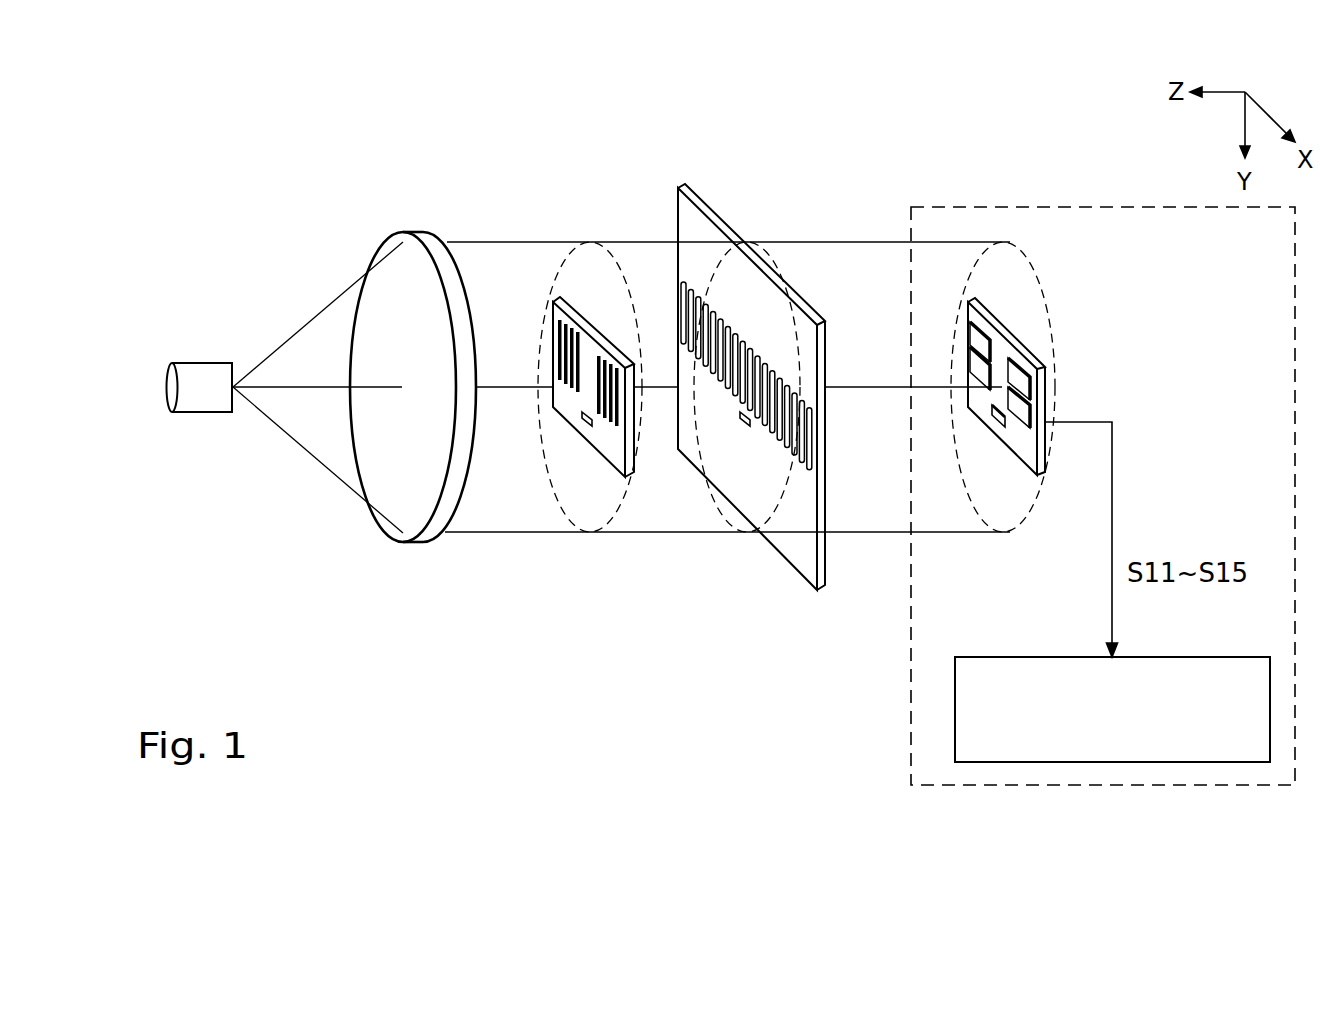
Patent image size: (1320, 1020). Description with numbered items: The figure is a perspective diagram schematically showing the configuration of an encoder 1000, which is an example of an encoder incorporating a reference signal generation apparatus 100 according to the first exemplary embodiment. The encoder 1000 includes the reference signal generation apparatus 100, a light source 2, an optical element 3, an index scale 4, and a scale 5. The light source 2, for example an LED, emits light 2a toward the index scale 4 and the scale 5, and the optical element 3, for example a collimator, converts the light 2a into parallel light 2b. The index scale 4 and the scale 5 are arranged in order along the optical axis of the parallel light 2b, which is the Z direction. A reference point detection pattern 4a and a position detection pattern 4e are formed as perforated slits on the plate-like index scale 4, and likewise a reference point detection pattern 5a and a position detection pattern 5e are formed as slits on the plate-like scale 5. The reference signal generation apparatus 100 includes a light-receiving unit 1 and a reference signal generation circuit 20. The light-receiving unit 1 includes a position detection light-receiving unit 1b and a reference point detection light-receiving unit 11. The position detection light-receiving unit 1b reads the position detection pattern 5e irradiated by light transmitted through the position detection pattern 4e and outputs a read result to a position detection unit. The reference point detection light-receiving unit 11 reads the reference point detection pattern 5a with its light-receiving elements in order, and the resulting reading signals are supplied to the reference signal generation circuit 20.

The encoder 1000 is at (770, 66).
The light-receiving unit 1 is at (999, 306).
The position detection light-receiving unit 1b is at (968, 302).
The reference point detection light-receiving unit 11 is at (997, 430).
The light source 2 is at (208, 362).
The light 2a is at (310, 456).
The parallel light 2b is at (498, 534).
The optical element 3 is at (410, 231).
The index scale 4 is at (581, 305).
The reference point detection pattern 4a is at (587, 427).
The position detection pattern 4e is at (540, 262).
The scale 5 is at (728, 228).
The reference point detection pattern 5a is at (747, 427).
The position detection pattern 5e is at (670, 262).
The reference signal generation apparatus 100 is at (1078, 207).
The reference signal generation circuit 20 is at (955, 706).